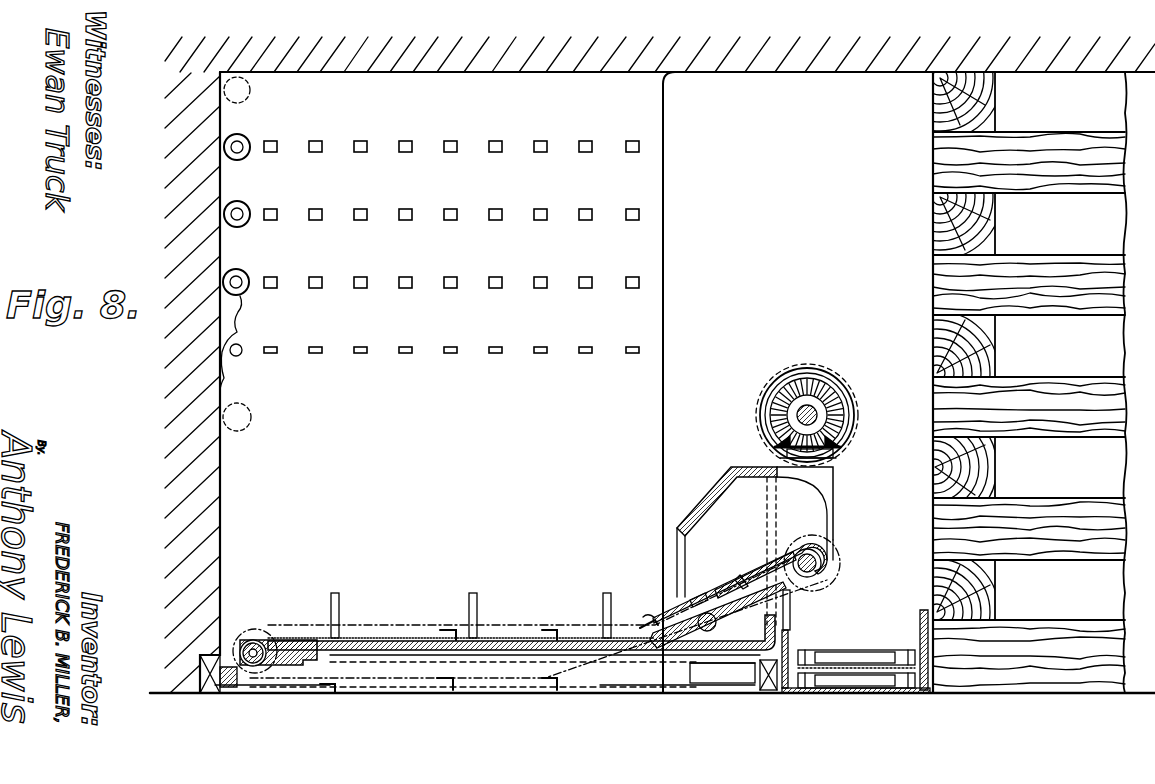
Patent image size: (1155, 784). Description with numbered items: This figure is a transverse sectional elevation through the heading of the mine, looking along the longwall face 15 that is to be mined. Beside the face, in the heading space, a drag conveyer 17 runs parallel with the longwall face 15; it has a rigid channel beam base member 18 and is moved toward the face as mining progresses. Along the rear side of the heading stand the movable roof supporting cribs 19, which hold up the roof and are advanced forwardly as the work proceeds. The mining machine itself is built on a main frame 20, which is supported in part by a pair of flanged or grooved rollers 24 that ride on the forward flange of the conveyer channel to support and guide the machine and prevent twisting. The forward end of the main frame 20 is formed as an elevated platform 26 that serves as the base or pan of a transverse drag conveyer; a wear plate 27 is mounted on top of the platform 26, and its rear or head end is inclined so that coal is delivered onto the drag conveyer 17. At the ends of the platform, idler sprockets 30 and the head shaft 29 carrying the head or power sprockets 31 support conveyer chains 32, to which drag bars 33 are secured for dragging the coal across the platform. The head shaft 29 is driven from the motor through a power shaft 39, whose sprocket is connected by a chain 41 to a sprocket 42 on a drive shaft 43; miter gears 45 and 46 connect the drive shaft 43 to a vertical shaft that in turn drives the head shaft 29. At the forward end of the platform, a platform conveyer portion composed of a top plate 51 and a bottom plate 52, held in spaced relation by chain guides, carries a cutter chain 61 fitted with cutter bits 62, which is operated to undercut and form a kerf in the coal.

The longwall face 15 is at (640, 325).
The drag conveyer 17 is at (865, 657).
The channel beam base member 18 is at (920, 637).
The movable roof supporting crib 19 is at (940, 347).
The main frame 20 is at (727, 470).
The flanged or grooved roller 24 is at (786, 617).
The elevated platform 26 is at (372, 656).
The wear plate 27 is at (402, 640).
The head shaft 29 is at (822, 563).
The idler sprocket 30 is at (248, 633).
The head sprocket 31 is at (820, 545).
The conveyer chain 32 is at (505, 630).
The drag bar 33 is at (445, 632).
The power shaft 39 is at (706, 612).
The chain 41 is at (763, 470).
The sprocket 42 is at (797, 380).
The drive shaft 43 is at (817, 410).
The miter gear 45 is at (822, 388).
The miter gear 46 is at (840, 448).
The top plate 51 is at (708, 668).
The bottom plate 52 is at (677, 686).
The cutter chain 61 is at (726, 676).
The cutter bit 62 is at (207, 684).